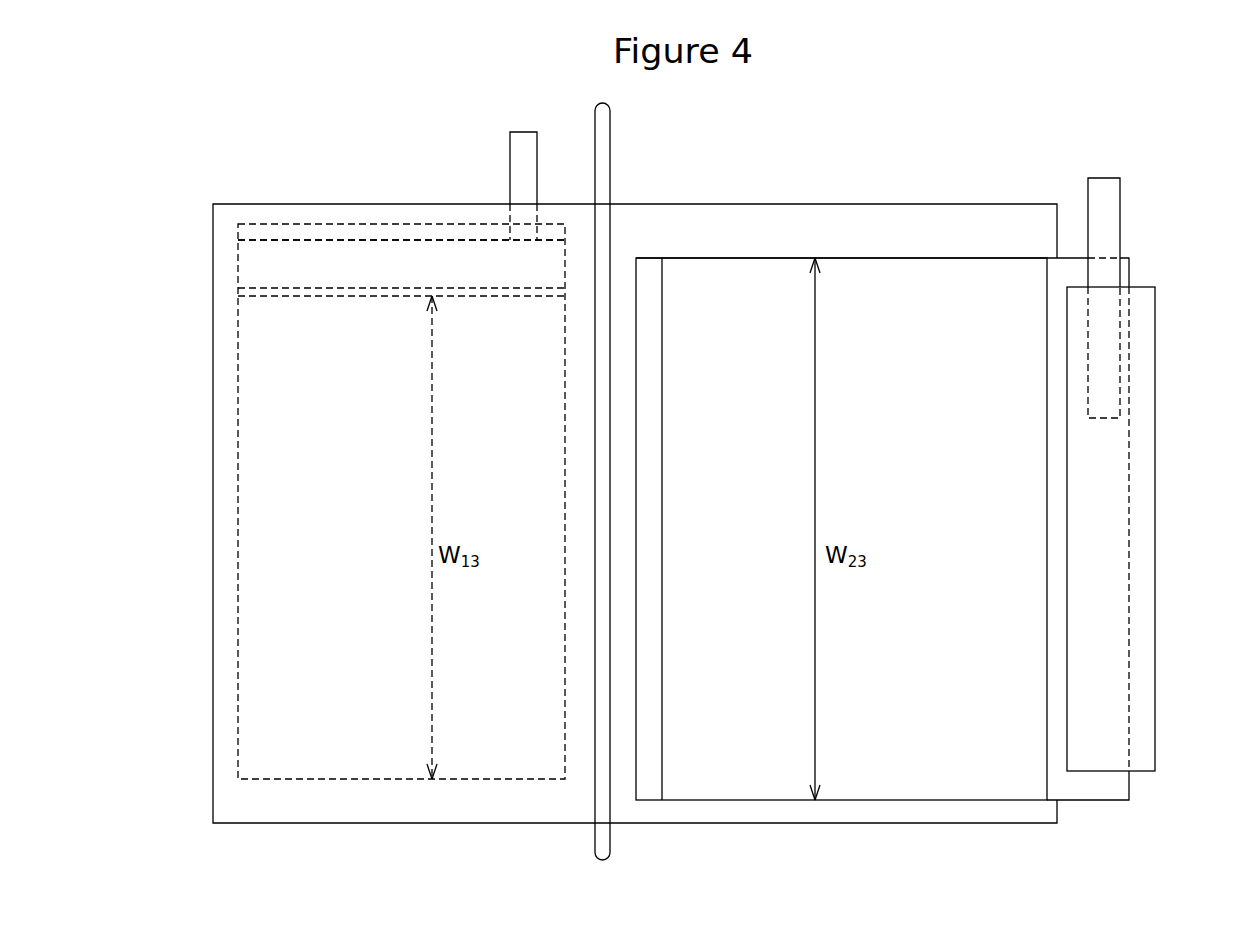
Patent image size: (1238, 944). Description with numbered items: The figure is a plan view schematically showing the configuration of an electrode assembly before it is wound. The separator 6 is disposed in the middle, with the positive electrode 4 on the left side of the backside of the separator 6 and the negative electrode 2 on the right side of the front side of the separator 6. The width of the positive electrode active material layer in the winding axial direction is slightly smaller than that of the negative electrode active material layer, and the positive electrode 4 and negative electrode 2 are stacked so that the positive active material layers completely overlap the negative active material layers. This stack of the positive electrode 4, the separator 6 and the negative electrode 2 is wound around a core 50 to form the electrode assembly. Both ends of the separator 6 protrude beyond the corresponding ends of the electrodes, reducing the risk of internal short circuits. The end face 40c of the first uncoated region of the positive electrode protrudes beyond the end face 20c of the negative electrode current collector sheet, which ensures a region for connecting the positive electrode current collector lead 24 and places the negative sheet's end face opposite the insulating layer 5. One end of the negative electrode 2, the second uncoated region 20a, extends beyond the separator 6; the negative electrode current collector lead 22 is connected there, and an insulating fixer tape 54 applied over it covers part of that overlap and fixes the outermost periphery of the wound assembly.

The negative electrode 2 is at (902, 785).
The positive electrode 4 is at (255, 537).
The insulating layer 5 is at (255, 261).
The separator 6 is at (888, 224).
The second uncoated region 20a is at (1101, 785).
The end face of negative electrode current collector sheet 20c is at (734, 258).
The negative electrode current collector lead 22 is at (1105, 209).
The positive electrode current collector lead 24 is at (524, 146).
The end face of first uncoated region 40c is at (332, 240).
The core 50 is at (602, 125).
The insulating fixer tape 54 is at (1138, 495).